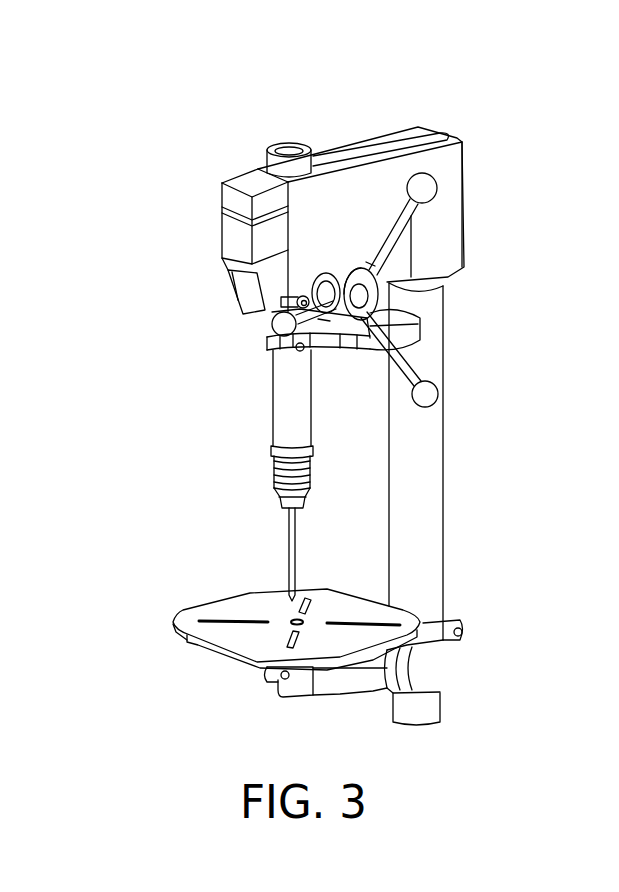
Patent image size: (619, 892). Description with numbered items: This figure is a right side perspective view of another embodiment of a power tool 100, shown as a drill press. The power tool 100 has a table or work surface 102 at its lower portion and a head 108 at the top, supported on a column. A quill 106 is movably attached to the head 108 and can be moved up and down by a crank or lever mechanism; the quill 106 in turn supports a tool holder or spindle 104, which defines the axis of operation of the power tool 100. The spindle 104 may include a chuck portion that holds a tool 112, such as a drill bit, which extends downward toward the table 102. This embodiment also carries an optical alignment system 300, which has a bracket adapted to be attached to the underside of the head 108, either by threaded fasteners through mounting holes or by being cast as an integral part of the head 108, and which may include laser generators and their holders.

The power tool 100 is at (463, 575).
The table 102 is at (222, 630).
The spindle 104 is at (284, 500).
The quill 106 is at (273, 403).
The head 108 is at (224, 262).
The tool 112 is at (290, 553).
The optical alignment system 300 is at (418, 354).